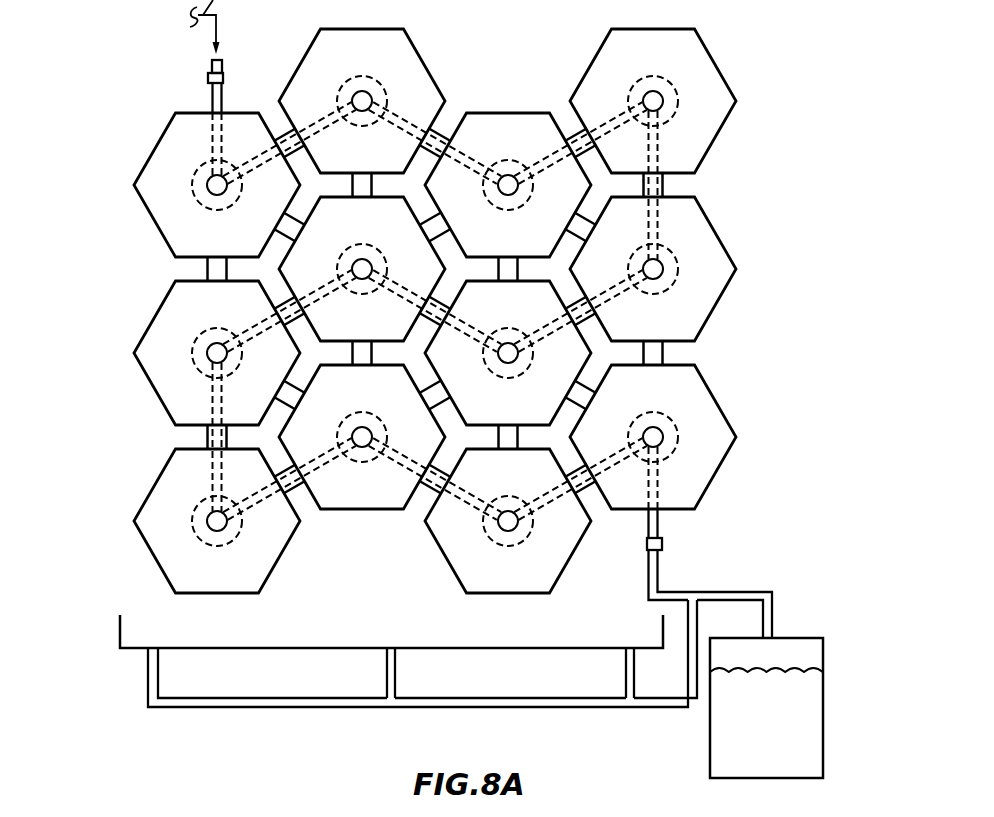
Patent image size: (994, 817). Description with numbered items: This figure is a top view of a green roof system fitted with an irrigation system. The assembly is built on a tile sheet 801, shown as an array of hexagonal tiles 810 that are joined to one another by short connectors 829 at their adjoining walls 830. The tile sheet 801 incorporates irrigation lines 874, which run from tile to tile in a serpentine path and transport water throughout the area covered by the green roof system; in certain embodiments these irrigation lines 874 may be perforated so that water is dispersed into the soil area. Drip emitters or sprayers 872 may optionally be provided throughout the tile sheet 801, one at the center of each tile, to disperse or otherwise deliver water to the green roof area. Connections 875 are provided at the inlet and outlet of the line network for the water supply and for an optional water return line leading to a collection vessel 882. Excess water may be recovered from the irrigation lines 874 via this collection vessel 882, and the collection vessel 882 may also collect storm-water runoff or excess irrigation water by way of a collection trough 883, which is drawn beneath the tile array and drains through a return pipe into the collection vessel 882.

The tile sheet 801 is at (812, 540).
The hexagonal reactor cell 810 is at (708, 48).
The cell connector 829 is at (663, 190).
The cell wall 830 is at (553, 265).
The drip emitters or sprayers 872 is at (640, 418).
The irrigation lines 874 is at (558, 330).
The connections 875 is at (208, 78).
The collection vessel 882 is at (823, 733).
The collection trough 883 is at (118, 640).